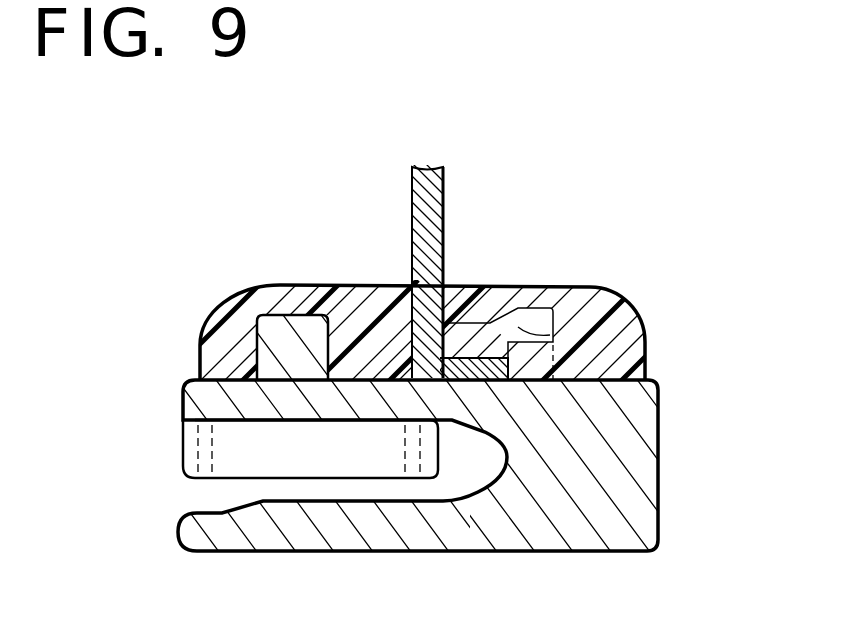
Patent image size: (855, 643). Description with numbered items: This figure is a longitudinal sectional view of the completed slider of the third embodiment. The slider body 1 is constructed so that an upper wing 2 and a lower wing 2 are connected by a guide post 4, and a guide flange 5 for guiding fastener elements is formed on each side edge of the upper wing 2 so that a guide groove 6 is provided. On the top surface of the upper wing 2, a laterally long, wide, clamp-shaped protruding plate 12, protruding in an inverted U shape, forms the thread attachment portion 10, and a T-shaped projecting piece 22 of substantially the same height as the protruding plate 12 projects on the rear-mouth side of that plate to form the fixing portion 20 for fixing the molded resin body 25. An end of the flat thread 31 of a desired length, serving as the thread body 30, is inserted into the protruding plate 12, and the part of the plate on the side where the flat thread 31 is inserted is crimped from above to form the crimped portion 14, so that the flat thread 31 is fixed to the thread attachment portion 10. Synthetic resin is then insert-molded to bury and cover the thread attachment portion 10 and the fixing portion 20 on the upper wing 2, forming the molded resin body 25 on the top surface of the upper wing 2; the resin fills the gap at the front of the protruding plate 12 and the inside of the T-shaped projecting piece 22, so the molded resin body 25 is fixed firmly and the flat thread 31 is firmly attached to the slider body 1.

The slider body 1 is at (663, 430).
The upper wing and lower wing 2 is at (217, 396).
The guide post 4 is at (587, 470).
The guide flange 5 is at (228, 438).
The guide groove 6 is at (357, 485).
The thread attachment portion 10 is at (567, 308).
The protruding plate 12 is at (556, 328).
The crimped portion 14 is at (491, 358).
The fixing portion 20 is at (248, 354).
The T-shaped projecting piece 22 is at (285, 345).
The molded resin body 25 is at (323, 284).
The thread body 30 is at (447, 188).
The flat thread 31 is at (425, 195).